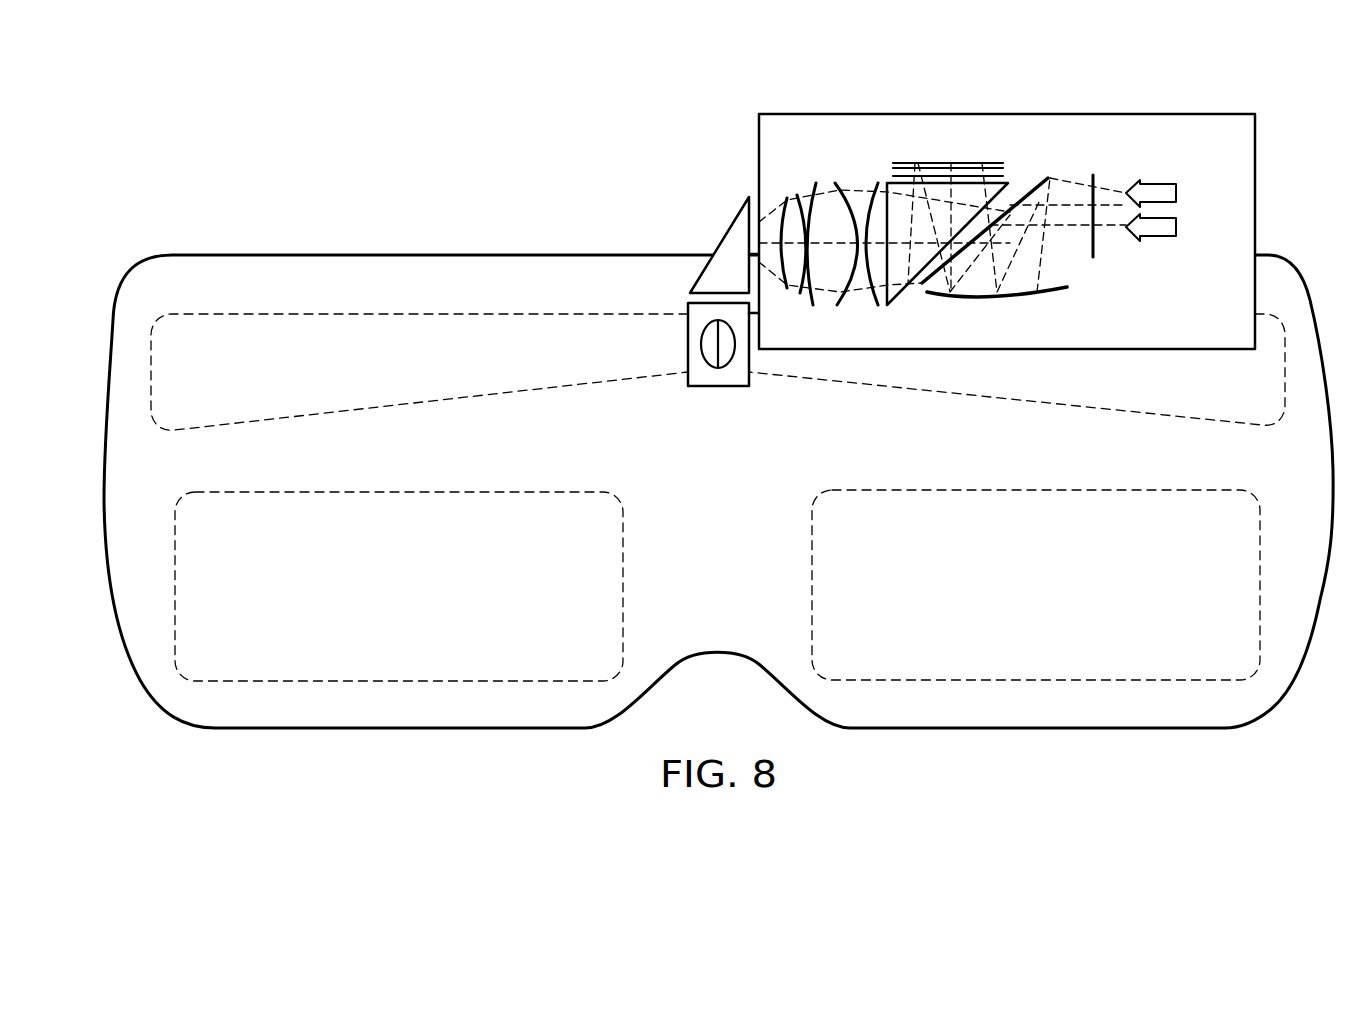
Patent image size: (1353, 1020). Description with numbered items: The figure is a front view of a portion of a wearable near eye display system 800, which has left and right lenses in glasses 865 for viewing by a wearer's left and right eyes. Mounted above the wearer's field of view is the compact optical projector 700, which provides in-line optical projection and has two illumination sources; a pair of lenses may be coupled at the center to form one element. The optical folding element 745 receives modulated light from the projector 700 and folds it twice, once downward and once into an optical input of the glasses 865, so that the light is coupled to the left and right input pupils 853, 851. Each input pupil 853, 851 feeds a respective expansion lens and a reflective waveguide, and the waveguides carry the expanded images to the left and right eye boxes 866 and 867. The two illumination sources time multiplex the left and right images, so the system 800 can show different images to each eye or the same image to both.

The near eye display system 800 is at (450, 86).
The glasses 865 is at (410, 265).
The left eye box 866 is at (1060, 600).
The right eye box 867 is at (421, 600).
The compact optical projector 700 is at (1046, 104).
The optical folding element 745 is at (697, 190).
The right input pupil 851 is at (708, 345).
The left input pupil 853 is at (728, 345).